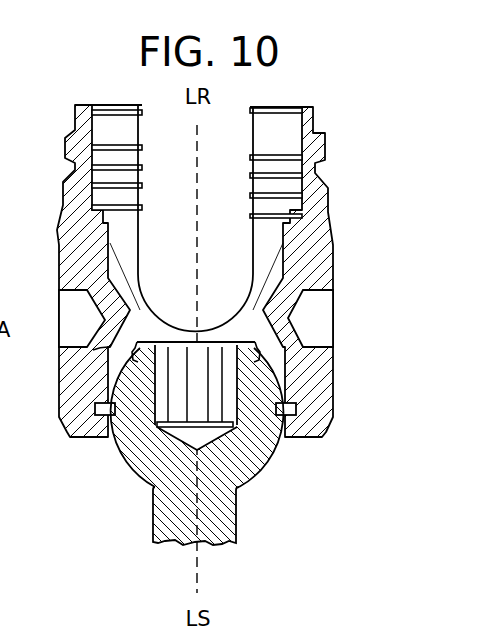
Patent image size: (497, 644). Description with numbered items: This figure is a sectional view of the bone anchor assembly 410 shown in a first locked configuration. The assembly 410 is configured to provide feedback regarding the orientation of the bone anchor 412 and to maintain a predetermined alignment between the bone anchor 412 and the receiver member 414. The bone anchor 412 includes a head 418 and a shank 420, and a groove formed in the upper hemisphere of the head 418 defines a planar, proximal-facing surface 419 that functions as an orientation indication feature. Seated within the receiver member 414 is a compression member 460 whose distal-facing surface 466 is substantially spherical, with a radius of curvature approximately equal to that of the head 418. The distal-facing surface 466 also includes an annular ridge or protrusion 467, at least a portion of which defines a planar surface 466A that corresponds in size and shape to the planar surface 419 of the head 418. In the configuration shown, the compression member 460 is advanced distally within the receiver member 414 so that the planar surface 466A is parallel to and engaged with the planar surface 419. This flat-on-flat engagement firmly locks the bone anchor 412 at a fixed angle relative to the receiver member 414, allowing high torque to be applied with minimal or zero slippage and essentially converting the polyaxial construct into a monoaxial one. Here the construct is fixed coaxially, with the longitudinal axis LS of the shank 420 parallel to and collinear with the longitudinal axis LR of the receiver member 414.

The bone anchor assembly 410 is at (201, 251).
The bone anchor 412 is at (181, 463).
The receiver member 414 is at (322, 272).
The head 418 is at (243, 463).
The planar surface 419 is at (93, 350).
The shank 420 is at (217, 527).
The compression member 460 is at (260, 242).
The distal-facing surface 466 is at (265, 362).
The planar surface 466A is at (280, 371).
The annular ridge or protrusion 467 is at (270, 338).